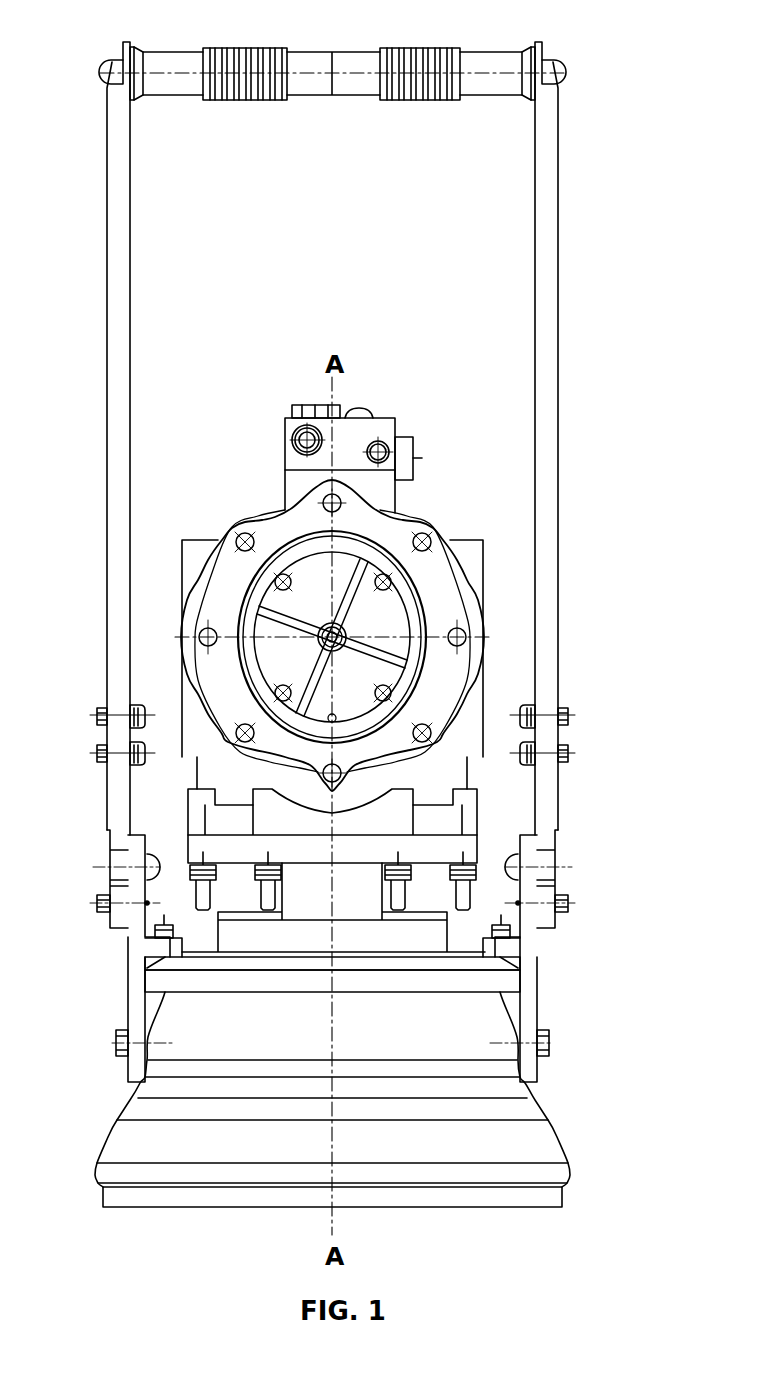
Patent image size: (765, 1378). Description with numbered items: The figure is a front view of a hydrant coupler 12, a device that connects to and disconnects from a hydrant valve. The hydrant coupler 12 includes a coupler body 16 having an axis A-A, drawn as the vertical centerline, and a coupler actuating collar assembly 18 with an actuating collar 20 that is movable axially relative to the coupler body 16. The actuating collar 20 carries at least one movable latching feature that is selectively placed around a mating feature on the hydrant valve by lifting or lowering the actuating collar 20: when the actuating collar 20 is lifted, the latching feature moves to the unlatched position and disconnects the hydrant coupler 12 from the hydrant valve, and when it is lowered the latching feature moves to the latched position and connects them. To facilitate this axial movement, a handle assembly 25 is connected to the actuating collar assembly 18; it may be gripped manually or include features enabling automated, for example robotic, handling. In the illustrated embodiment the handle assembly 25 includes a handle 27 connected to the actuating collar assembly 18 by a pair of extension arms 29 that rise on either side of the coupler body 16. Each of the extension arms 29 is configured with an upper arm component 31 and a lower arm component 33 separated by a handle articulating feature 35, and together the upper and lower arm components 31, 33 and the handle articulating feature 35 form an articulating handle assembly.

The hydrant coupler 12 is at (597, 329).
The coupler body 16 is at (463, 577).
The coupler actuating collar assembly 18 is at (538, 984).
The actuating collar 20 is at (540, 1146).
The handle assembly 25 is at (106, 603).
The handle 27 is at (179, 63).
The extension arms 29 is at (122, 243).
The upper arm component 31 is at (117, 842).
The lower arm component 33 is at (138, 1018).
The handle articulating feature 35 is at (562, 887).